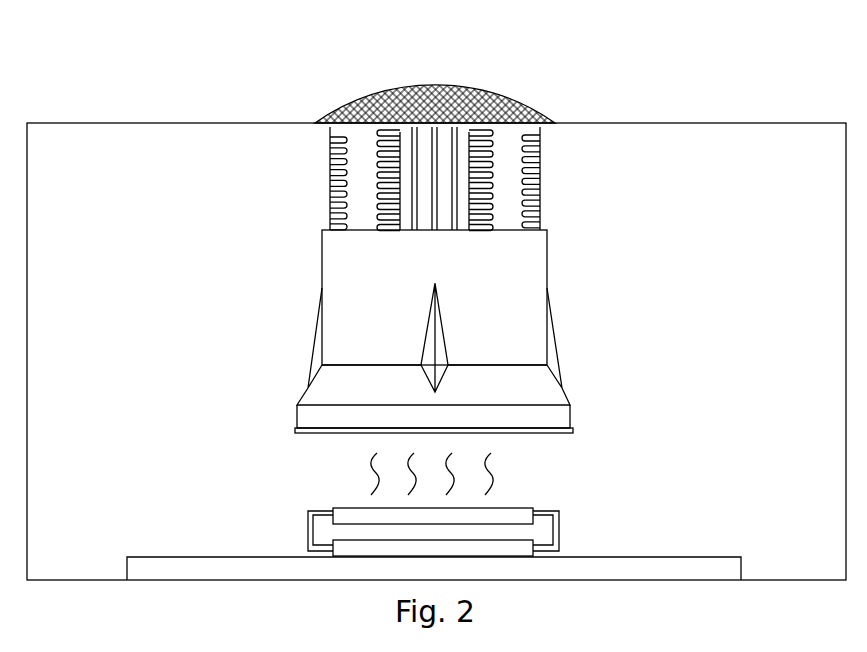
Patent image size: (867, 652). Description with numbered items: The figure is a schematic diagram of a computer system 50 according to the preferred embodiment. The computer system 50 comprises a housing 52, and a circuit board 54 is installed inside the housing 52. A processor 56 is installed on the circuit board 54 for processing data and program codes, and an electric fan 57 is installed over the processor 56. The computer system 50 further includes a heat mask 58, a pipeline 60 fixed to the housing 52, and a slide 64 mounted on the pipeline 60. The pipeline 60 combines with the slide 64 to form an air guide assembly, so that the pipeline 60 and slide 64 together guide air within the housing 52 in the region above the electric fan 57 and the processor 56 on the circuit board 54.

The computer system 50 is at (724, 70).
The housing 52 is at (783, 122).
The circuit board 54 is at (158, 567).
The processor 56 is at (527, 549).
The electric fan 57 is at (516, 514).
The heat mask 58 is at (508, 99).
The pipeline 60 is at (503, 180).
The slide 64 is at (522, 276).